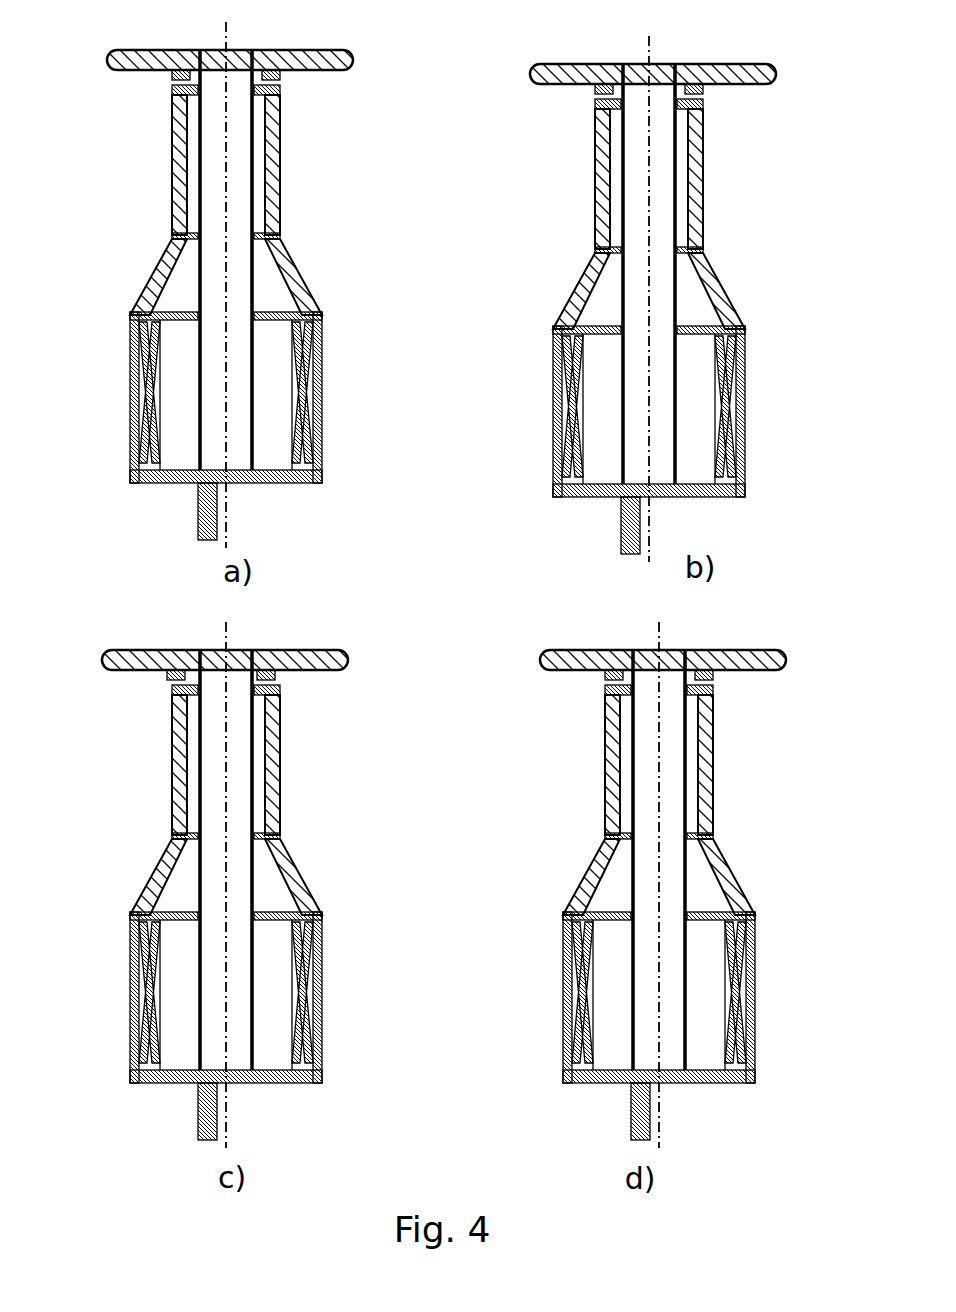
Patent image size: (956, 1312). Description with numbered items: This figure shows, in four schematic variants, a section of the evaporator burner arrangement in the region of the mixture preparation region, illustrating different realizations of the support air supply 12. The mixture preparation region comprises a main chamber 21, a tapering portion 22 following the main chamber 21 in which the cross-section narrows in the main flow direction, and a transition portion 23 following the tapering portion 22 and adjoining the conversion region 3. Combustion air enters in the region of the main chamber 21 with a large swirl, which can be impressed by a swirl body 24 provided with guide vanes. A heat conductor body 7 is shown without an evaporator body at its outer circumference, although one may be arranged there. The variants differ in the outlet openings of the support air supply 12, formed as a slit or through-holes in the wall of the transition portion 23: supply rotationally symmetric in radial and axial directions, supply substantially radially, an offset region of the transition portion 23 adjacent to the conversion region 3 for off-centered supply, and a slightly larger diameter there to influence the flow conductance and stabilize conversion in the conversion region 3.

The conversion region 3 is at (207, 43).
The support air supply 12 is at (178, 93).
The transition portion 23 is at (268, 180).
The heat conductor body 7 is at (212, 221).
The tapering portion 22 is at (268, 284).
The main chamber 21 is at (275, 405).
The swirl body 24 is at (308, 445).